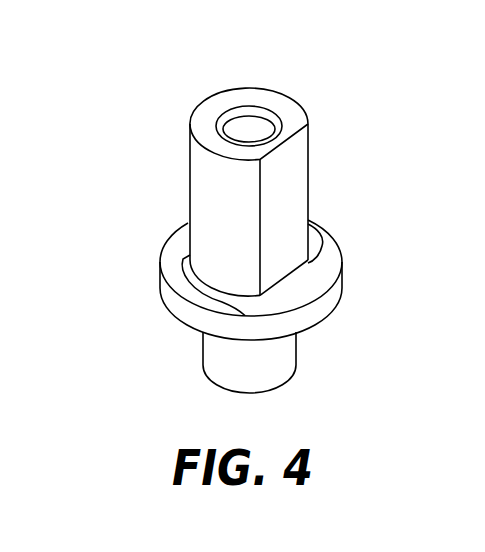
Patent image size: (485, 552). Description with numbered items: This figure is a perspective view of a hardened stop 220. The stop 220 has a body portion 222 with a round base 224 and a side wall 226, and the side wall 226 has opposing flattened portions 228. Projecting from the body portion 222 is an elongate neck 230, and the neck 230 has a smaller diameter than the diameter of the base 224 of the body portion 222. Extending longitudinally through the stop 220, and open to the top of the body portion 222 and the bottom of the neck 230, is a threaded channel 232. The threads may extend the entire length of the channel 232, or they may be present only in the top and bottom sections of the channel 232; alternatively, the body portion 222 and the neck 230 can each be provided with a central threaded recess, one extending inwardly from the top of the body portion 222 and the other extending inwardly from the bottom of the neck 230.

The stop 220 is at (322, 162).
The body portion 222 is at (190, 182).
The round base 224 is at (172, 298).
The side wall 226 is at (216, 227).
The flattened portions 228 is at (214, 104).
The elongate neck 230 is at (262, 355).
The threaded channel 232 is at (253, 133).